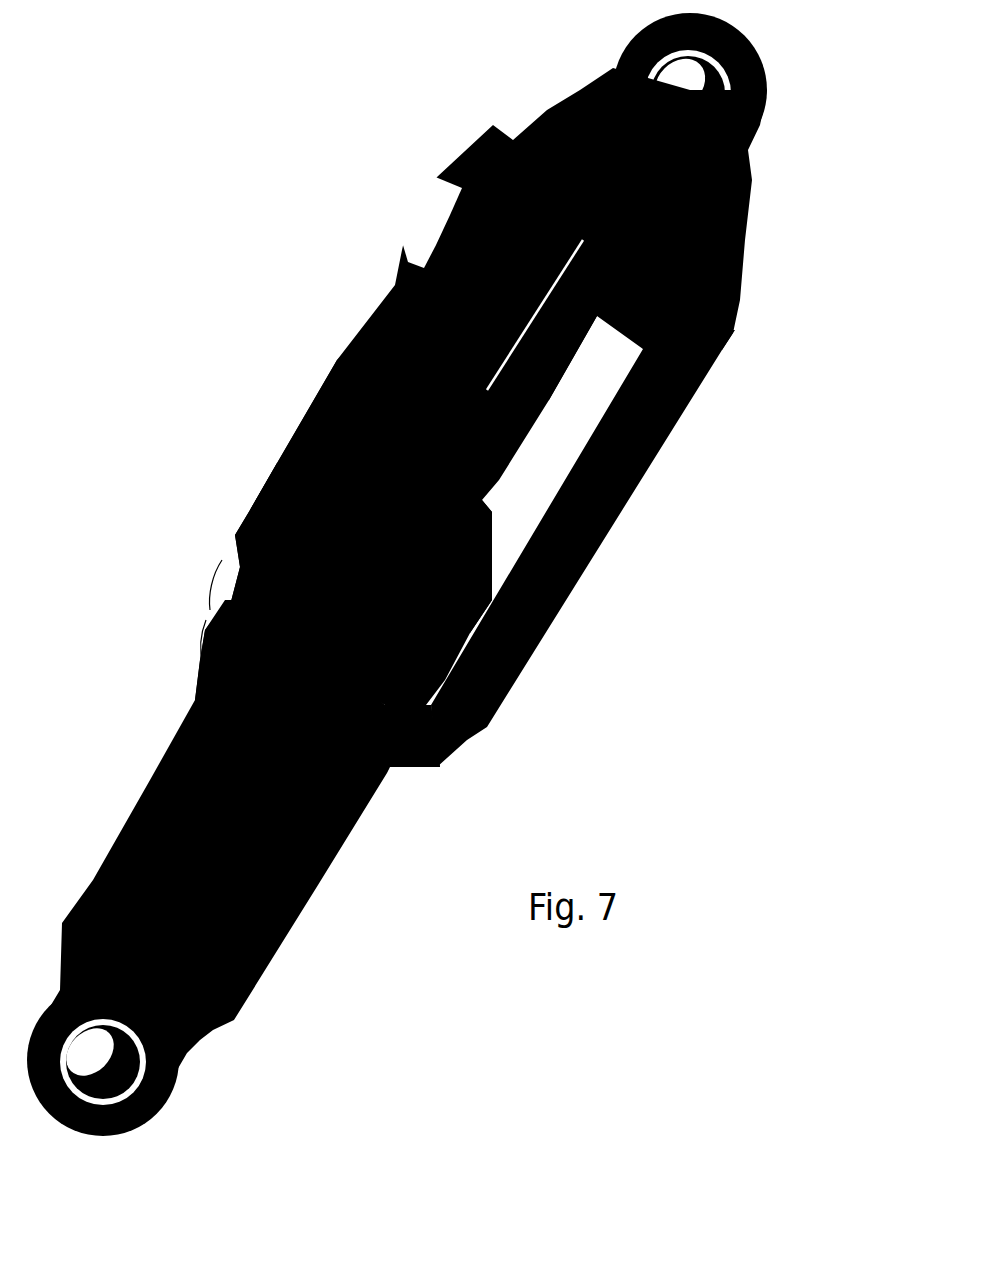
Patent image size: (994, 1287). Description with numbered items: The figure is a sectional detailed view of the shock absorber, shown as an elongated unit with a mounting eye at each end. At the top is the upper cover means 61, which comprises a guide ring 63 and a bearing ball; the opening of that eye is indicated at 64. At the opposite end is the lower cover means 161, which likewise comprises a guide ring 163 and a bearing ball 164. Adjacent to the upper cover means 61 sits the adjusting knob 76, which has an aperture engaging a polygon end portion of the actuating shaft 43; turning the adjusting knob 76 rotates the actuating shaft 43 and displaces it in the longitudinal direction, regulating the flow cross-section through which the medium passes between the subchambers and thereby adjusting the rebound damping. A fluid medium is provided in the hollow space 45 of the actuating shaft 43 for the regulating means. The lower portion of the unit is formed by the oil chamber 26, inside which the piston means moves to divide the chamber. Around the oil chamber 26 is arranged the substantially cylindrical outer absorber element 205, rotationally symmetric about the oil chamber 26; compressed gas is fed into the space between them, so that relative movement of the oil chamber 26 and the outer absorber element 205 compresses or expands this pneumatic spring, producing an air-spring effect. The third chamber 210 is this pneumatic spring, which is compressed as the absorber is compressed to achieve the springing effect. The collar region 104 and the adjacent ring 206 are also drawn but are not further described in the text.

The upper cover means 61 is at (762, 62).
The guide ring 63 is at (767, 84).
The upper mounting hole 64 is at (763, 106).
The adjusting knob 76 is at (750, 207).
The actuating shaft 43 is at (533, 410).
The hollow space 45 is at (497, 473).
The third chamber 210 is at (520, 507).
The seal head 104 is at (557, 607).
The outer absorber element 205 is at (247, 513).
The adjuster collar 206 is at (220, 613).
The oil chamber 26 is at (192, 729).
The lower cover means 161 is at (175, 1080).
The guide ring 163 is at (130, 1131).
The bearing ball 164 is at (100, 1136).